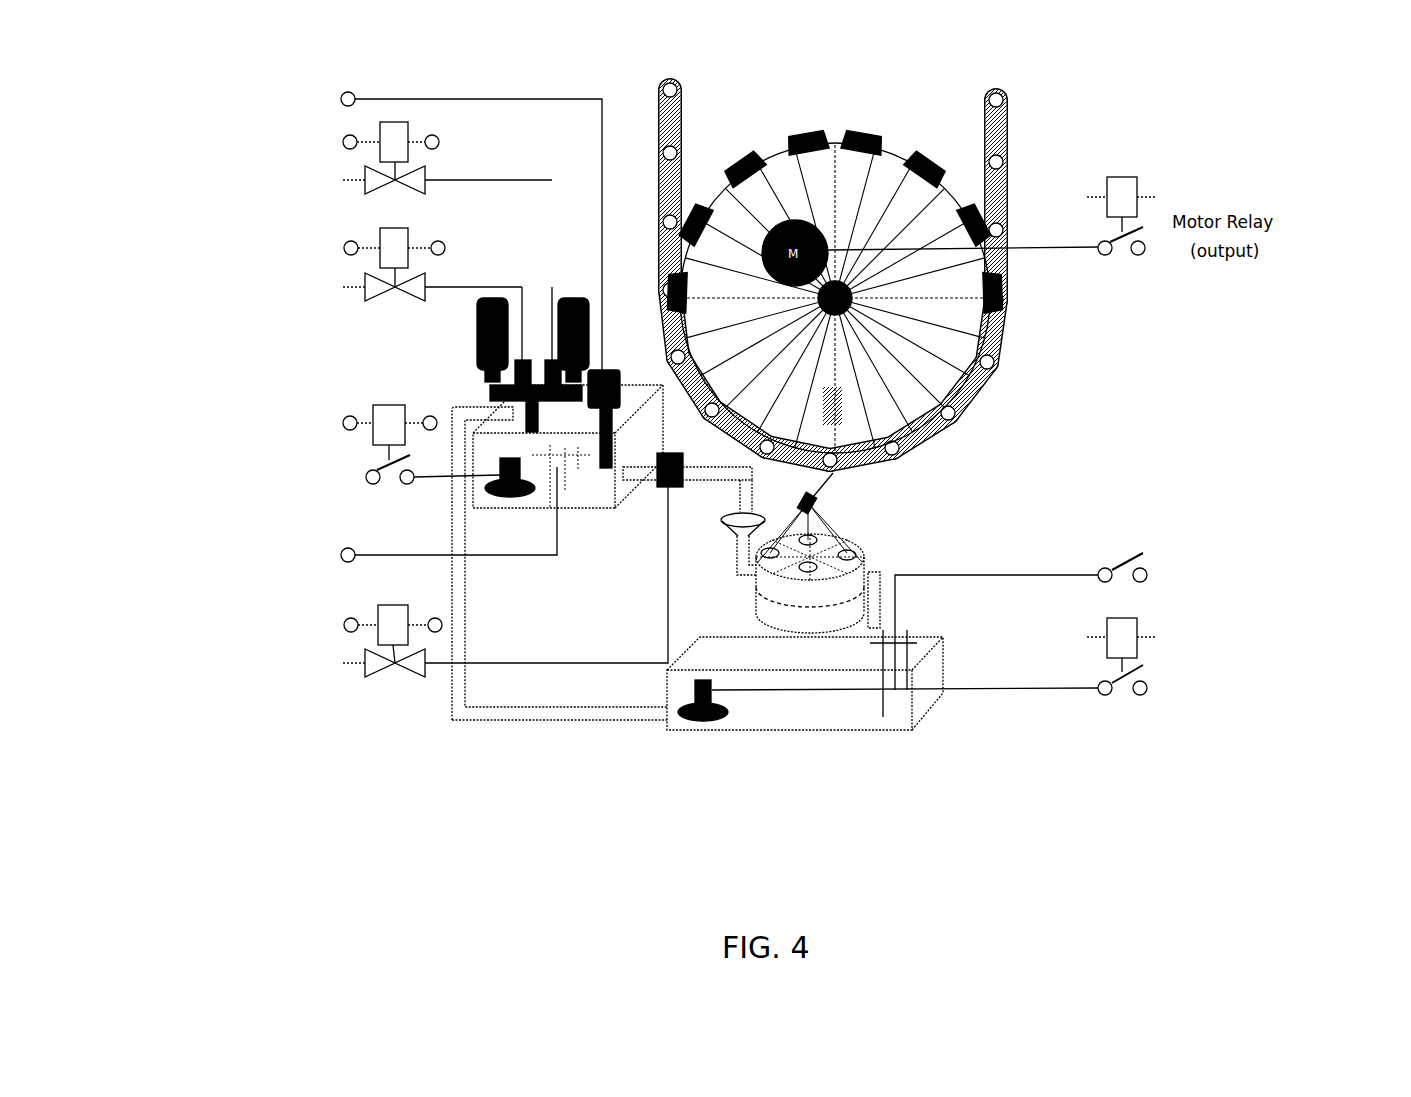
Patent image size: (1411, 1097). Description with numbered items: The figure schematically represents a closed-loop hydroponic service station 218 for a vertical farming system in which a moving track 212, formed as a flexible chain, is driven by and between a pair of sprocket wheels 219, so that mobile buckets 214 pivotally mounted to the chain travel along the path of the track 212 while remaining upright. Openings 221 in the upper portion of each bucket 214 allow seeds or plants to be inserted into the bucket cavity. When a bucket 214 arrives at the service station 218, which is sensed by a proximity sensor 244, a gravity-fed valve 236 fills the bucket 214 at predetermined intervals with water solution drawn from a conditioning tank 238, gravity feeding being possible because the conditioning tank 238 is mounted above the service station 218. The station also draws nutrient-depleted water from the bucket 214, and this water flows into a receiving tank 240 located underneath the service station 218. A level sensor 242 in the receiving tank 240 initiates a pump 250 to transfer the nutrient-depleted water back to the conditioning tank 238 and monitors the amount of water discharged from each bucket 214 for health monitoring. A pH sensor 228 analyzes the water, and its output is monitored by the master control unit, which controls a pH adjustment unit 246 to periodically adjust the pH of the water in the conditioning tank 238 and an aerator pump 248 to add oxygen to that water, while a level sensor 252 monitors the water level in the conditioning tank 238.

The moving track 212 is at (1012, 115).
The wheels (sprocket) 219 is at (818, 118).
The proximity sensor 244 is at (843, 407).
The bucket 214 is at (775, 598).
The openings 221 is at (814, 537).
The conditioning tank 238 is at (603, 515).
The receiving tank 240 is at (850, 732).
The pump 250 is at (708, 720).
The level sensor 242 is at (1119, 632).
The gravity-fed valve 236 is at (495, 567).
The aerator pump 248 is at (388, 447).
The level sensor 252 is at (387, 507).
The pH sensor 228 is at (420, 264).
The pH adjustment unit 246 is at (180, 117).
The closed-loop hydroponic service station 218 is at (546, 820).